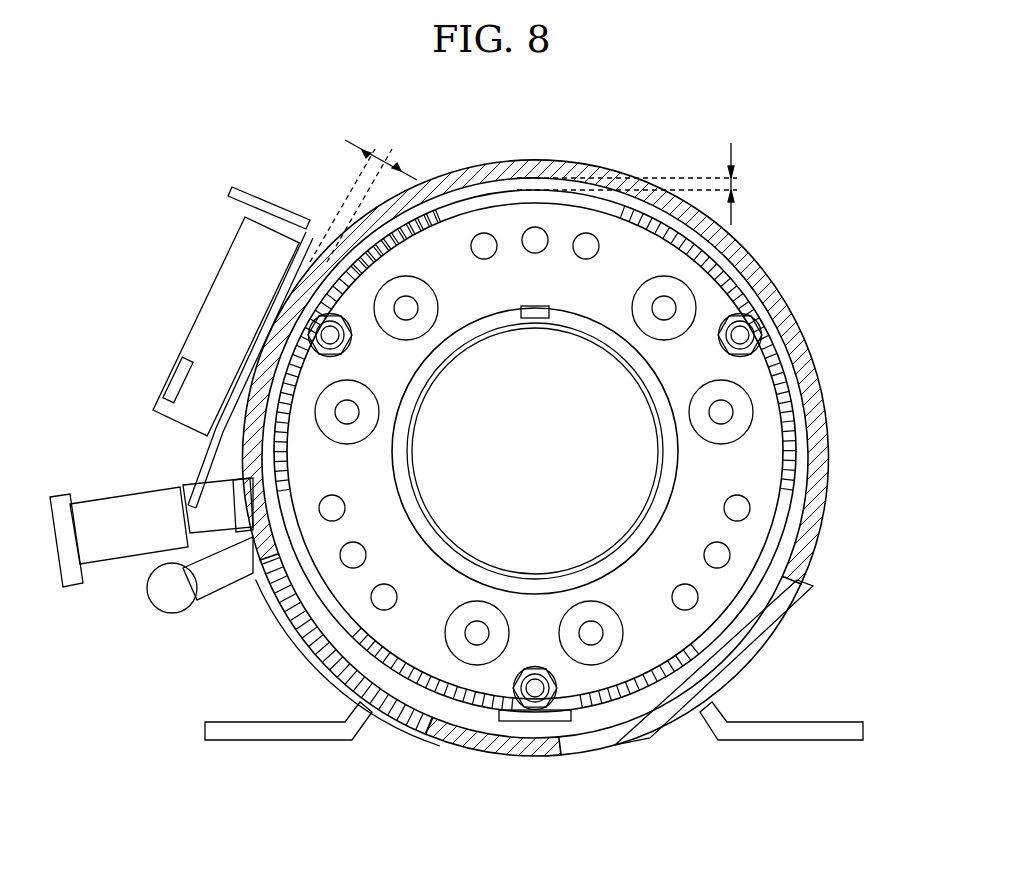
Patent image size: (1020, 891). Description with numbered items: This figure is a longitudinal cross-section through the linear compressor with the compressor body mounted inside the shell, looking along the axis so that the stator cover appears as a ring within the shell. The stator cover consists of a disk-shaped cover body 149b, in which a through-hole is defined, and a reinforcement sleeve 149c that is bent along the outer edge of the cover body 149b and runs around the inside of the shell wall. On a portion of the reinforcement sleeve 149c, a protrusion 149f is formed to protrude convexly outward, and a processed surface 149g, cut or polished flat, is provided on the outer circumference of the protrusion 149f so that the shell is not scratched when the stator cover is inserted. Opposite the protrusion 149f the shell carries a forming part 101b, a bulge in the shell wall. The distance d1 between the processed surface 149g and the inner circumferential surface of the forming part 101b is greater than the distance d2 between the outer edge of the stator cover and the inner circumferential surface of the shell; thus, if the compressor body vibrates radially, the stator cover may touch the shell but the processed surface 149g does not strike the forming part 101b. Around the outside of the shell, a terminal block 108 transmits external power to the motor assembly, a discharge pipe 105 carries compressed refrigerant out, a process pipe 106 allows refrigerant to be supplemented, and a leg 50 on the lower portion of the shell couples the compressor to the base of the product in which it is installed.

The leg 50 is at (818, 720).
The forming part 101b is at (783, 275).
The discharge pipe 105 is at (171, 612).
The process pipe 106 is at (120, 503).
The terminal block 108 is at (233, 277).
The cover body 149b is at (752, 468).
The reinforcement sleeve 149c is at (787, 440).
The protrusion 149f is at (748, 298).
The processed surface 149g is at (748, 330).
The distance between processed surface and forming part d1 is at (345, 140).
The distance between stator cover edge and shell d2 is at (731, 143).